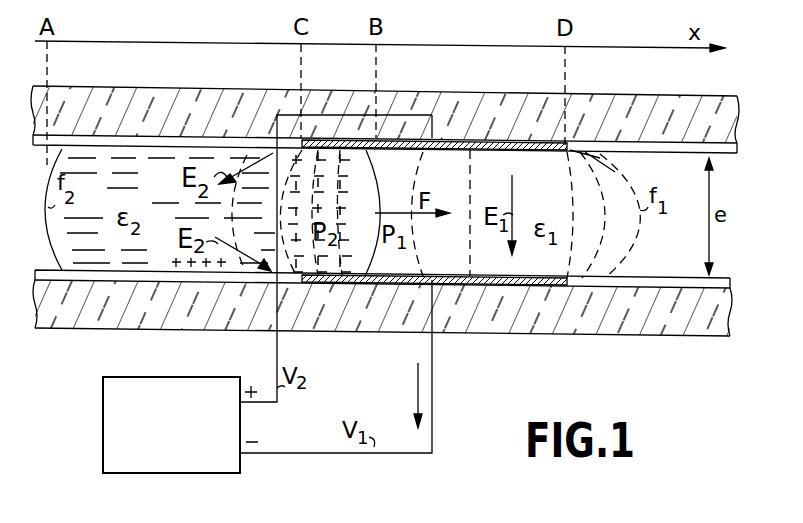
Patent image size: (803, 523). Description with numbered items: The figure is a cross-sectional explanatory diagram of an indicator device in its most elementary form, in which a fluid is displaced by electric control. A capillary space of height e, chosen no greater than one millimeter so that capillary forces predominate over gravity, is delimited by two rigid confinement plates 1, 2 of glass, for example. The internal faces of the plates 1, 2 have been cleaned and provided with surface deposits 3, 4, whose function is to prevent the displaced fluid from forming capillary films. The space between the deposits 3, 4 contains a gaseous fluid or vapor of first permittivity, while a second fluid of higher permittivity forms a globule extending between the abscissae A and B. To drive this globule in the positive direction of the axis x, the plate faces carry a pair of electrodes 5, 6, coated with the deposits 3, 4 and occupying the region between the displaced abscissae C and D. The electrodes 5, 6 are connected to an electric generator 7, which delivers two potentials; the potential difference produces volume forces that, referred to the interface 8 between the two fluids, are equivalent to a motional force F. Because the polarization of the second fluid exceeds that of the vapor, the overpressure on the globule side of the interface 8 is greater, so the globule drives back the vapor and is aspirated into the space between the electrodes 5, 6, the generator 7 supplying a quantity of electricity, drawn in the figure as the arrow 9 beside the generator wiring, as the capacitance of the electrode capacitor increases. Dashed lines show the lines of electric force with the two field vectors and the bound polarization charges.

The confinement plate 1 is at (668, 96).
The confinement plate 2 is at (692, 326).
The surface deposit 3 is at (730, 152).
The surface deposit 4 is at (722, 278).
The electrode 5 is at (478, 150).
The electrode 6 is at (500, 278).
The electric generator 7 is at (103, 405).
The interface 8 is at (376, 161).
The voltage direction arrow 9 is at (418, 392).